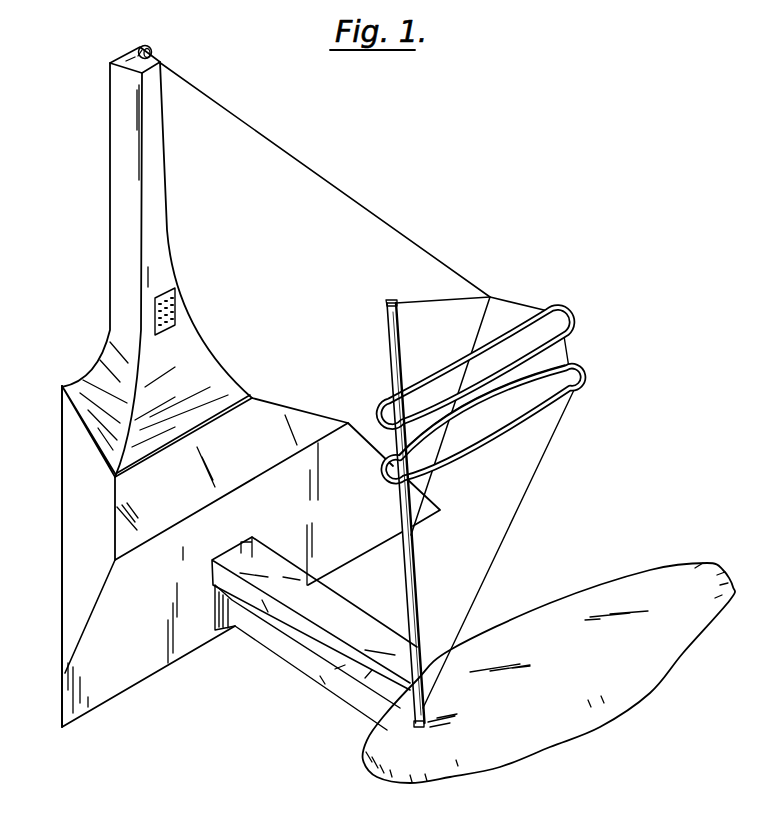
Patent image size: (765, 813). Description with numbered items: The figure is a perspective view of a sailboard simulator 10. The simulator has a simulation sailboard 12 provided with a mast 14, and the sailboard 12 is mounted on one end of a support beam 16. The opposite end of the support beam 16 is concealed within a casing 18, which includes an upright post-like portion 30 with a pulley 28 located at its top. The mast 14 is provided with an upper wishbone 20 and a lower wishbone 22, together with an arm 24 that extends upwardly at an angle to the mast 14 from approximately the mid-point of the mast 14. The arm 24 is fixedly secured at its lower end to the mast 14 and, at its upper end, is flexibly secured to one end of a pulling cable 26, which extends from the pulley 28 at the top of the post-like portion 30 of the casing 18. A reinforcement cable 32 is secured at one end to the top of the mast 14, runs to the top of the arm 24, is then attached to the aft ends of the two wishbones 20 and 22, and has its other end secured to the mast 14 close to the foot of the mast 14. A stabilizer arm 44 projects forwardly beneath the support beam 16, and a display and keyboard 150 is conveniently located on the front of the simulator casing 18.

The sailboard simulator 10 is at (157, 705).
The simulation sailboard 12 is at (596, 608).
The mast 14 is at (413, 598).
The support beam 16 is at (312, 614).
The casing 18 is at (61, 537).
The upper wishbone 20 is at (486, 342).
The lower wishbone 22 is at (455, 467).
The arm 24 is at (441, 445).
The pulling cable 26 is at (305, 157).
The pulley 28 is at (152, 49).
The upright post-like portion 30 is at (156, 163).
The reinforcement cable 32 is at (424, 301).
The stabilizer arm 44 is at (296, 655).
The display and keyboard 150 is at (174, 307).